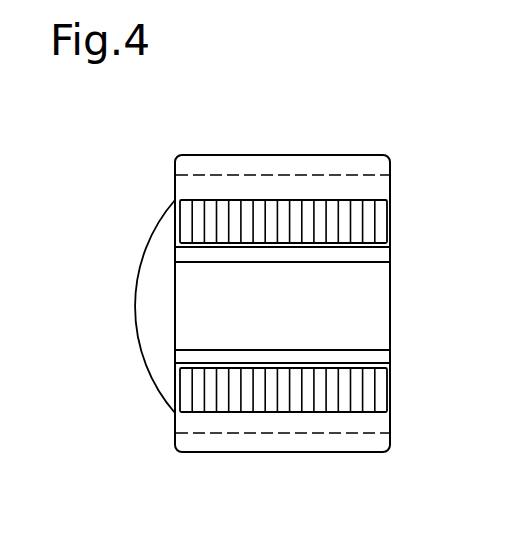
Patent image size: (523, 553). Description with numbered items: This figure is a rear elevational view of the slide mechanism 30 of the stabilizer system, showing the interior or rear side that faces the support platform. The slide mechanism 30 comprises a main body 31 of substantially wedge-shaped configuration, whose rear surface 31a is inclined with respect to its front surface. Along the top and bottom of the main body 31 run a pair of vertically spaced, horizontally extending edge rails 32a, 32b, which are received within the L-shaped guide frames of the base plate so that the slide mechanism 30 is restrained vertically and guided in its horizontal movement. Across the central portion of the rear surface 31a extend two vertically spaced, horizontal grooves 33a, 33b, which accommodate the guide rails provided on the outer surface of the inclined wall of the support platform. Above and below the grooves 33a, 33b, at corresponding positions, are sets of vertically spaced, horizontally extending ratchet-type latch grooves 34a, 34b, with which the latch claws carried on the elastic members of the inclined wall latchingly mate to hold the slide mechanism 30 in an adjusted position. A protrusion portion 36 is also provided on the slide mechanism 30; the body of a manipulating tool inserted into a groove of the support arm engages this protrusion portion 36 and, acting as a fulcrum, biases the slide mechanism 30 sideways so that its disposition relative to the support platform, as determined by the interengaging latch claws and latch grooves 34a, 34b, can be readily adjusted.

The slide mechanism 30 is at (390, 421).
The main body 31 is at (390, 185).
The rear surface 31a is at (366, 312).
The edge rail 32a is at (223, 167).
The edge rail 32b is at (208, 445).
The groove 33a is at (378, 259).
The groove 33b is at (378, 352).
The latch grooves 34a is at (307, 203).
The latch grooves 34b is at (308, 400).
The protrusion portion 36 is at (143, 308).